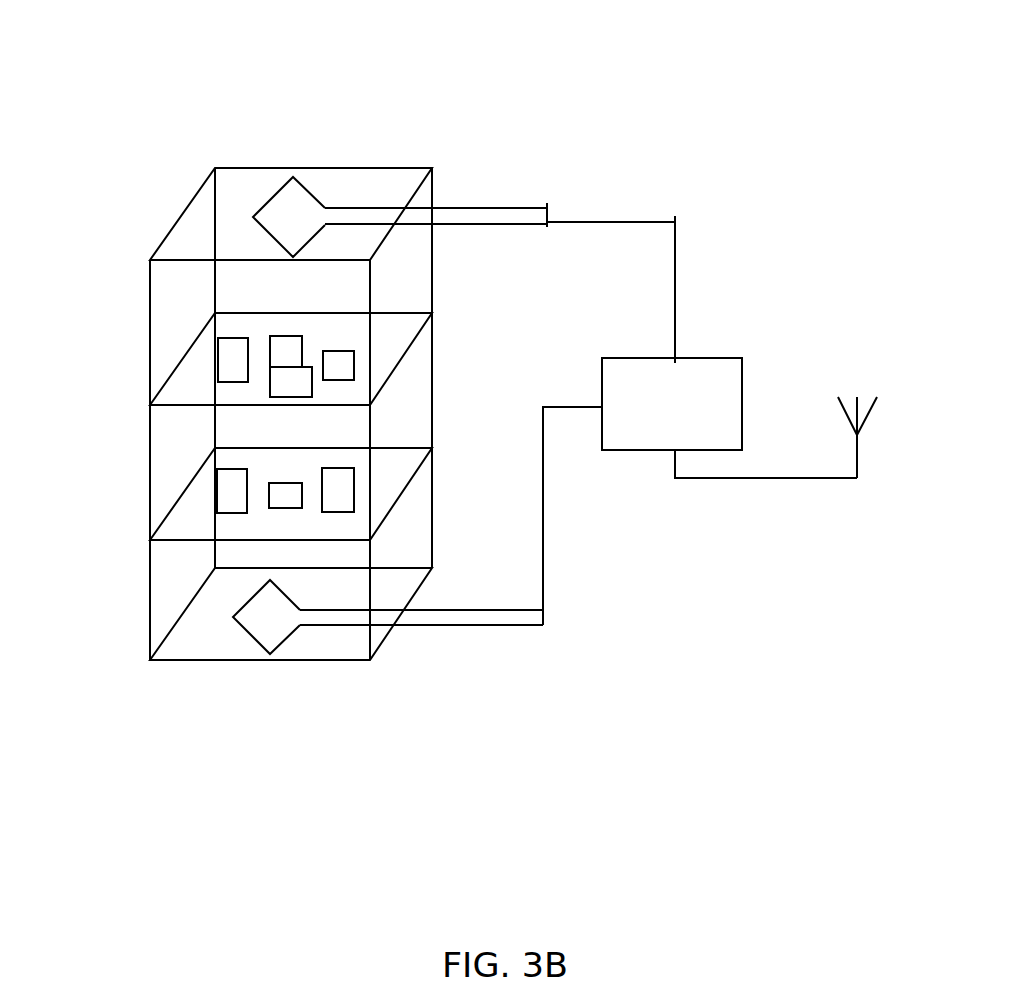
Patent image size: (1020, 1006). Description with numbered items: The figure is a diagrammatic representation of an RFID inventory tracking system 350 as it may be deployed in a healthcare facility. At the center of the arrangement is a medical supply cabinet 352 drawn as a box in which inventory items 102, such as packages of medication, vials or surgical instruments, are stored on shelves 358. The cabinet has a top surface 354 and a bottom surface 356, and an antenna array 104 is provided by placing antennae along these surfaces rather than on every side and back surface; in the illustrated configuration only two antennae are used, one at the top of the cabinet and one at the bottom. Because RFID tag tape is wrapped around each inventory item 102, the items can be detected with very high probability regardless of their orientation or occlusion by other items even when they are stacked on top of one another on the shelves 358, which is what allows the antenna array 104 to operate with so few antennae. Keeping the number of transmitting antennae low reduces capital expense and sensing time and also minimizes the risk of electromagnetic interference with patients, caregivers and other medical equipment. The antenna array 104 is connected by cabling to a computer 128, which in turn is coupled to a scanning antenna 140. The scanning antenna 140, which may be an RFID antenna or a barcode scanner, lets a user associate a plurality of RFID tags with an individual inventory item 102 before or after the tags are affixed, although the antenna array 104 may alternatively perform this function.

The RFID inventory tracking system 350 is at (493, 80).
The medical supply cabinet 352 is at (150, 293).
The top surface 354 is at (195, 197).
The bottom surface 356 is at (323, 667).
The shelves 358 is at (432, 310).
The inventory item 102 is at (230, 363).
The antenna array 104 is at (303, 188).
The computer 128 is at (622, 355).
The scanning antenna 140 is at (857, 378).